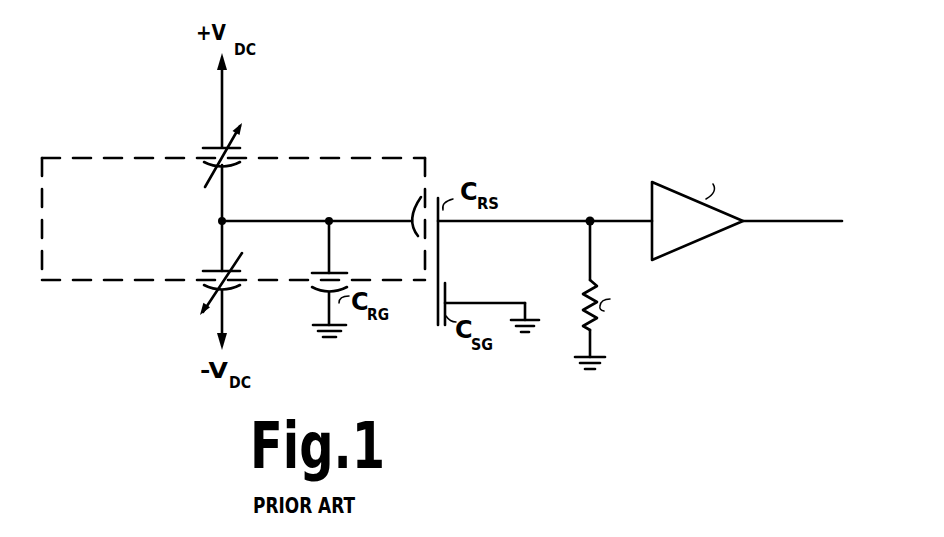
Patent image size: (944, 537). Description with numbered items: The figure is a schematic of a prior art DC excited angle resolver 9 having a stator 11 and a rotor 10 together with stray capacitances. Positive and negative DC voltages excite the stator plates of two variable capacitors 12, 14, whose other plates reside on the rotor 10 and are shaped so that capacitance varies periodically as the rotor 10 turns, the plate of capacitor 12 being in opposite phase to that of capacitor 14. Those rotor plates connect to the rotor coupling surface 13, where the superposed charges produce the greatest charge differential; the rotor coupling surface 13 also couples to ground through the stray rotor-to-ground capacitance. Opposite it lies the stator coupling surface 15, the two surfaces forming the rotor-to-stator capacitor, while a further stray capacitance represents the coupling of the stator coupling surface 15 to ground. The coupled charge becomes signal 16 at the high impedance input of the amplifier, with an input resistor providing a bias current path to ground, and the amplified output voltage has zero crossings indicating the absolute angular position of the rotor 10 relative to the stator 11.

The DC excited angle resolver 9 is at (569, 121).
The rotor 10 is at (336, 157).
The stator 11 is at (641, 316).
The variable capacitor 12 is at (216, 147).
The rotor coupling surface 13 is at (416, 212).
The variable capacitor 14 is at (216, 270).
The stator coupling surface 15 is at (439, 256).
The signal 16 is at (566, 218).